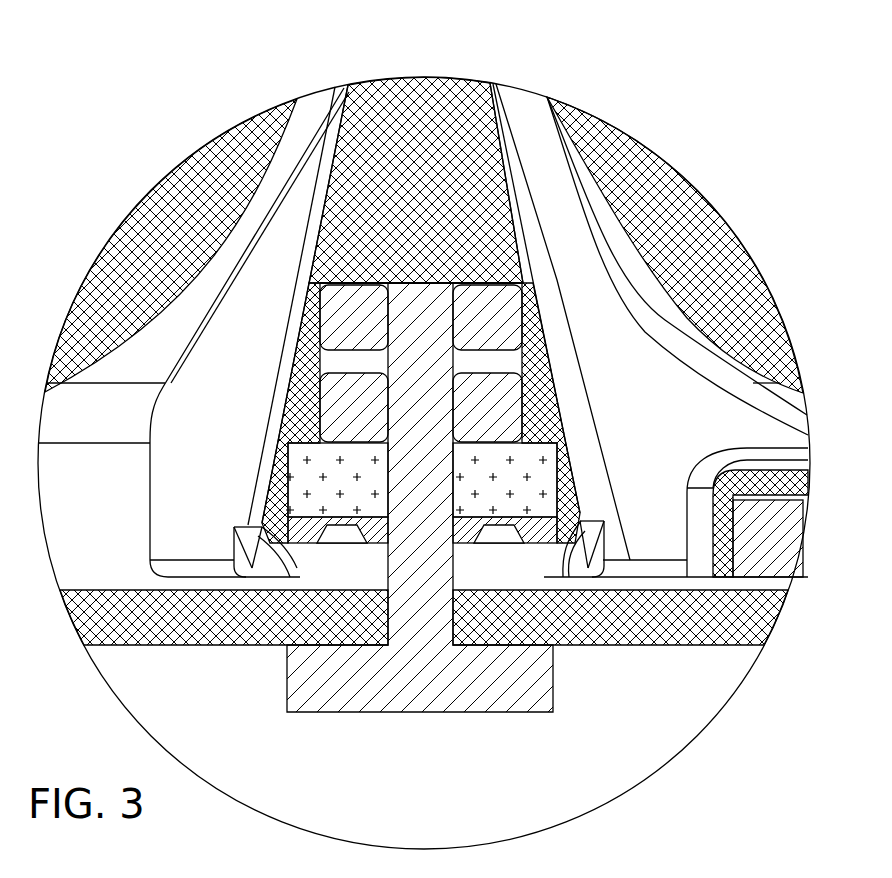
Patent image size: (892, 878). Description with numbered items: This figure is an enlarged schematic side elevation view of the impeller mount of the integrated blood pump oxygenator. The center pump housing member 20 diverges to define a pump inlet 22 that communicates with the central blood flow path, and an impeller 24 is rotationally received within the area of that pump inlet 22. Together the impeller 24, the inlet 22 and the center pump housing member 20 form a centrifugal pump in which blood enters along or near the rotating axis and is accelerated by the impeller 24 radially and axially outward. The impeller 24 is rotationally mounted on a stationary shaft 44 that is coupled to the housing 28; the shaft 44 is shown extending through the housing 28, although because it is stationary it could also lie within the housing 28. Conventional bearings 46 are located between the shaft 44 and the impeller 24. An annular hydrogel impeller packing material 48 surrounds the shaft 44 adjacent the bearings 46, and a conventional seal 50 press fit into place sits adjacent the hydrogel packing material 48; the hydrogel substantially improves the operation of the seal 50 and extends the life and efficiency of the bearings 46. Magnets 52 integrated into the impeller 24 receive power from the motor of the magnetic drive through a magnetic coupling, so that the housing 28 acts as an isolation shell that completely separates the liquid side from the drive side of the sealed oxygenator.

The center pump housing member 20 is at (103, 245).
The pump inlet 22 is at (527, 103).
The impeller 24 is at (468, 82).
The housing 28 is at (760, 648).
The stationary shaft 44 is at (430, 702).
The bearings 46 is at (500, 287).
The annular hydrogel impeller packing material 48 is at (297, 465).
The seal 50 is at (350, 538).
The magnets 52 is at (785, 552).